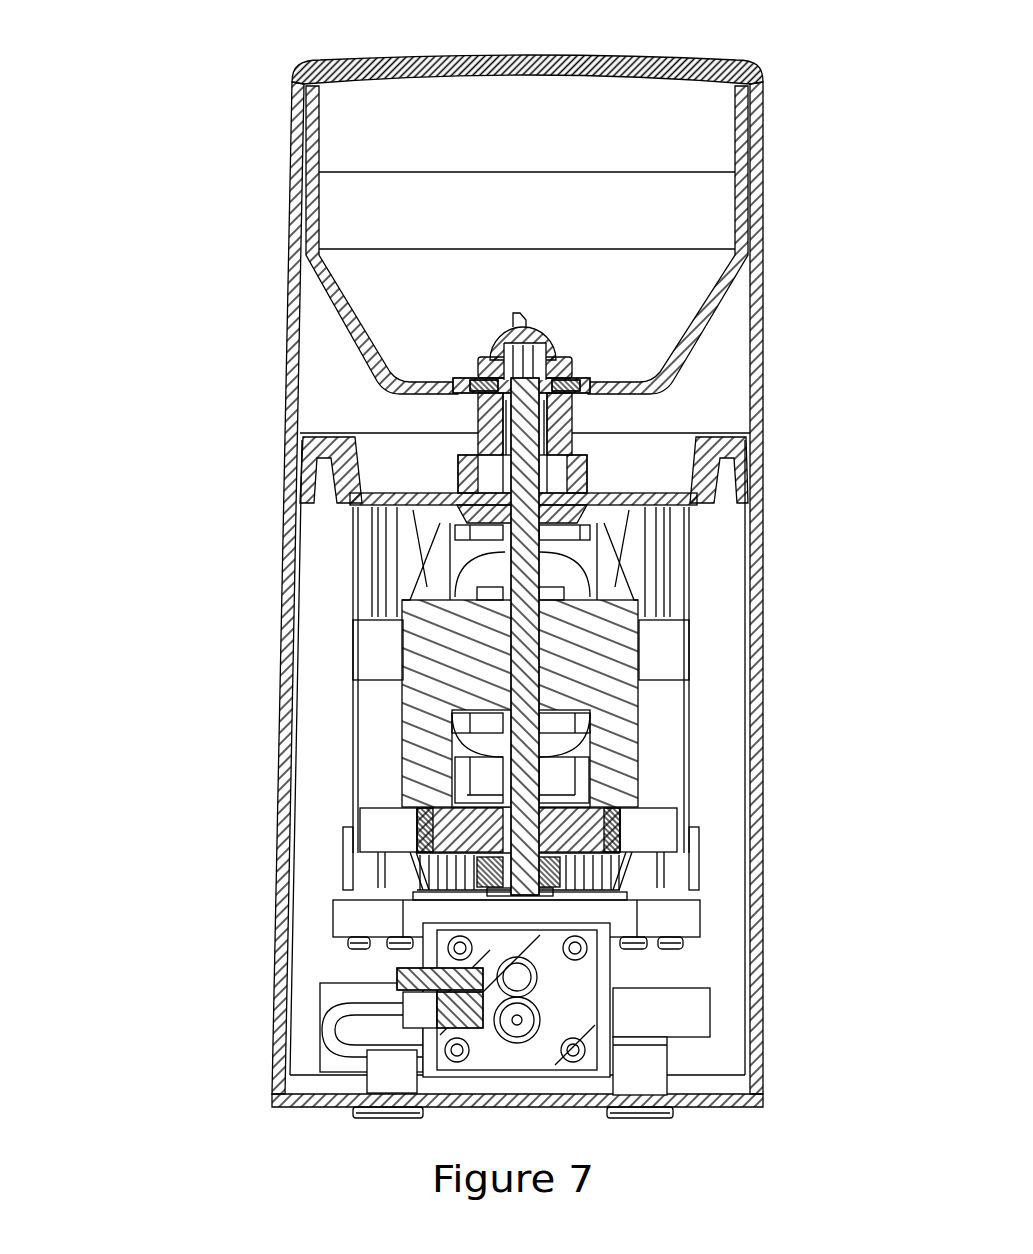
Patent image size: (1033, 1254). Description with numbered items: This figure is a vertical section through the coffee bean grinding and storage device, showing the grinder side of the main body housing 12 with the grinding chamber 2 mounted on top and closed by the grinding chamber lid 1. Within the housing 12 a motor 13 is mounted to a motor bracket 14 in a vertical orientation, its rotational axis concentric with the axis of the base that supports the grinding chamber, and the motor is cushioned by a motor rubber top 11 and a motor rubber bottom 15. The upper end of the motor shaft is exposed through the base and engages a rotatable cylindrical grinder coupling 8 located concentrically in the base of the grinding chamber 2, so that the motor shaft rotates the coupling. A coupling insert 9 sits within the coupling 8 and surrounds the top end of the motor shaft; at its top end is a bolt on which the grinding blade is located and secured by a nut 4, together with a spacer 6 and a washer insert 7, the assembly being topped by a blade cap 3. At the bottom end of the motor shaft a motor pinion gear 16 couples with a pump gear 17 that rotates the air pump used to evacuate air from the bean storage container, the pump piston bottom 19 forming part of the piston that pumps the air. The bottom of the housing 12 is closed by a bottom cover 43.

The grinding chamber lid 1 is at (300, 88).
The grinder chamber 2 is at (302, 218).
The blade cap 3 is at (550, 328).
The nut 4 is at (560, 347).
The spacer 6 is at (583, 402).
The washer insert 7 is at (455, 387).
The grinder coupling 8 is at (473, 417).
The coupling insert 9 is at (552, 430).
The motor rubber top 11 is at (607, 523).
The main body housing 12 is at (283, 592).
The motor 13 is at (583, 668).
The motor bracket 14 is at (372, 710).
The motor rubber bottom 15 is at (620, 827).
The motor pinion gear 16 is at (440, 870).
The pump gear 17 is at (600, 888).
The pump piston bottom 19 is at (437, 978).
The bottom cover 43 is at (725, 1105).